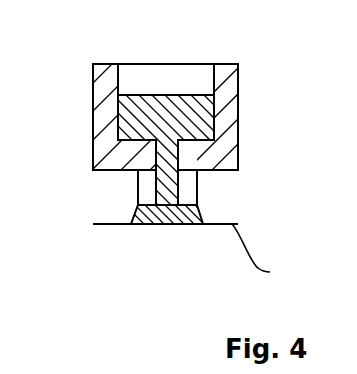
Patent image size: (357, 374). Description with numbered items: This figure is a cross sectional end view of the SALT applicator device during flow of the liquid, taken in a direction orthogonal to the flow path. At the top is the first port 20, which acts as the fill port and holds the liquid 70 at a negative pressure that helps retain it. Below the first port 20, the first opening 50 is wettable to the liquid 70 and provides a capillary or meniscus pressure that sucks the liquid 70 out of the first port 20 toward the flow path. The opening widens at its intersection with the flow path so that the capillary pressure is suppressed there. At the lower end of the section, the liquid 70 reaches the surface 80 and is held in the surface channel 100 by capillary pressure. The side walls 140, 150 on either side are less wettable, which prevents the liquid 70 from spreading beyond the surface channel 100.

The first port 20 is at (167, 72).
The first opening 50 is at (138, 180).
The liquid 70 is at (217, 121).
The side wall 140 is at (137, 203).
The side wall 150 is at (197, 188).
The surface channel 100 is at (140, 224).
The surface 80 is at (201, 256).